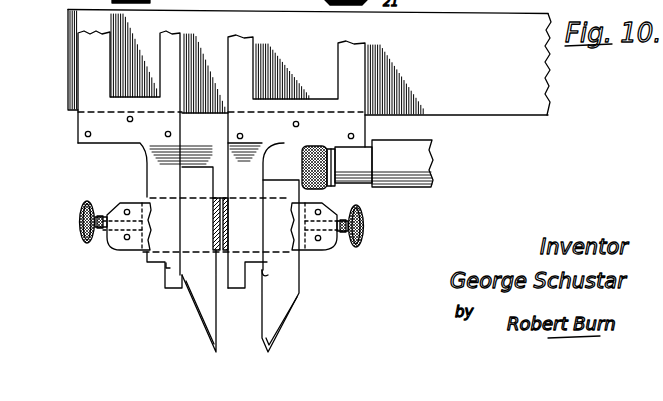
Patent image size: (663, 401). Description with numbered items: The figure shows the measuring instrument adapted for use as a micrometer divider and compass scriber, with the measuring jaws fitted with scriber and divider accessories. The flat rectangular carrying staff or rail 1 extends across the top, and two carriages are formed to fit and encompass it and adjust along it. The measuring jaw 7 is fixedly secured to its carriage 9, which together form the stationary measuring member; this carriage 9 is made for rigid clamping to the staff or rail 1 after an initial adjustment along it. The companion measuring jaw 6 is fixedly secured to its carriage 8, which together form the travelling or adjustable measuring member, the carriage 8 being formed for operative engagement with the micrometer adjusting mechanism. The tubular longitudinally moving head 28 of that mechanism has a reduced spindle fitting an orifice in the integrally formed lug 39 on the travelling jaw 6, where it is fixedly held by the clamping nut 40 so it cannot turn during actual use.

The carrying staff or rail 1 is at (70, 52).
The carriage 9 is at (172, 44).
The carriage 8 is at (240, 72).
The measuring jaw 7 is at (201, 242).
The measuring jaw 6 is at (228, 152).
The clamping nut 40 is at (304, 167).
The lug 39 is at (353, 165).
The longitudinally moving head 28 is at (402, 163).